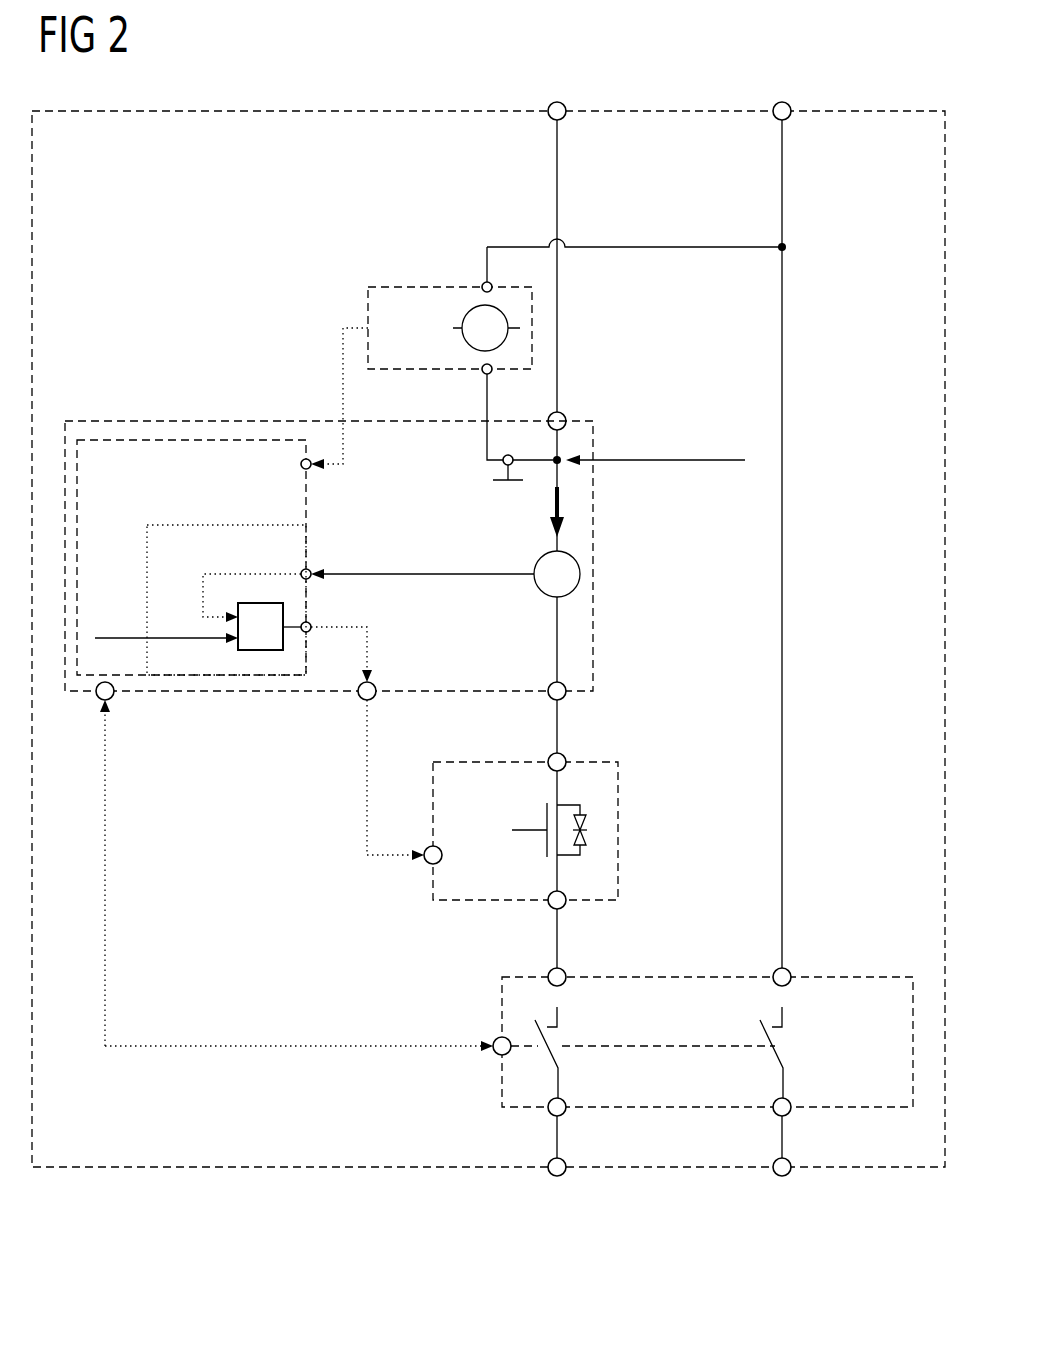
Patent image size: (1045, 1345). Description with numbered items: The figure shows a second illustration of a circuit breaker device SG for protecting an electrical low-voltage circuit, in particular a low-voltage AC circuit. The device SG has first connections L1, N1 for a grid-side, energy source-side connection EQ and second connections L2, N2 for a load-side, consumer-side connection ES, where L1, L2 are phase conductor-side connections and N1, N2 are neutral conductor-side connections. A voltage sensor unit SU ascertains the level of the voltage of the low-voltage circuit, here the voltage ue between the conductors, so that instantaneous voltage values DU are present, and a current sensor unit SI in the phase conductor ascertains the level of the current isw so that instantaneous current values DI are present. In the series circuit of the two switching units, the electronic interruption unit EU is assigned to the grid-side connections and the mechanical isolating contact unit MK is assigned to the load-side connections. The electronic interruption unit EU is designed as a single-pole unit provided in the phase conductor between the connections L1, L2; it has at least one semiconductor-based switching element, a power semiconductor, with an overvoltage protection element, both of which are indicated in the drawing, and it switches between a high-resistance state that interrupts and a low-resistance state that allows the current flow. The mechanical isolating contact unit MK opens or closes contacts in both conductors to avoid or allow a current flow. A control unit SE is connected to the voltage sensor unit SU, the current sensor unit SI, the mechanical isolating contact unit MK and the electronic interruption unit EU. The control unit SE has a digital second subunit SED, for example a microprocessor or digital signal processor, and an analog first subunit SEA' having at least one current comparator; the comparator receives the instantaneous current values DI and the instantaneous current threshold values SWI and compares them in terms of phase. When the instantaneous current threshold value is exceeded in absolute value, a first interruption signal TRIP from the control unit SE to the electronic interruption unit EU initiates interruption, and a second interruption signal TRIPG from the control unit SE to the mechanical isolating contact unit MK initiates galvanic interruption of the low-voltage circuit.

The circuit breaker device SG is at (488, 618).
The grid-side connection EQ is at (668, 73).
The first phase conductor-side connection L1 is at (556, 613).
The first neutral conductor-side connection N1 is at (781, 613).
The voltage sensor unit SU is at (450, 328).
The instantaneous voltage values DU is at (326, 398).
The input voltage ue is at (655, 441).
The switching current isw is at (533, 514).
The current sensor unit SI is at (580, 574).
The instantaneous current values DI is at (422, 556).
The control unit SE is at (194, 557).
The digital second subunit SED is at (226, 577).
The analog first subunit SEA' is at (229, 589).
The instantaneous current threshold values SWI is at (166, 618).
The first interruption signal TRIP is at (353, 743).
The electronic interruption unit EU is at (521, 831).
The second interruption signal TRIPG is at (296, 875).
The mechanical isolating contact unit MK is at (703, 1042).
The second phase conductor-side connection L2 is at (556, 1188).
The second neutral conductor-side connection N2 is at (781, 1188).
The load-side connection ES is at (667, 1212).